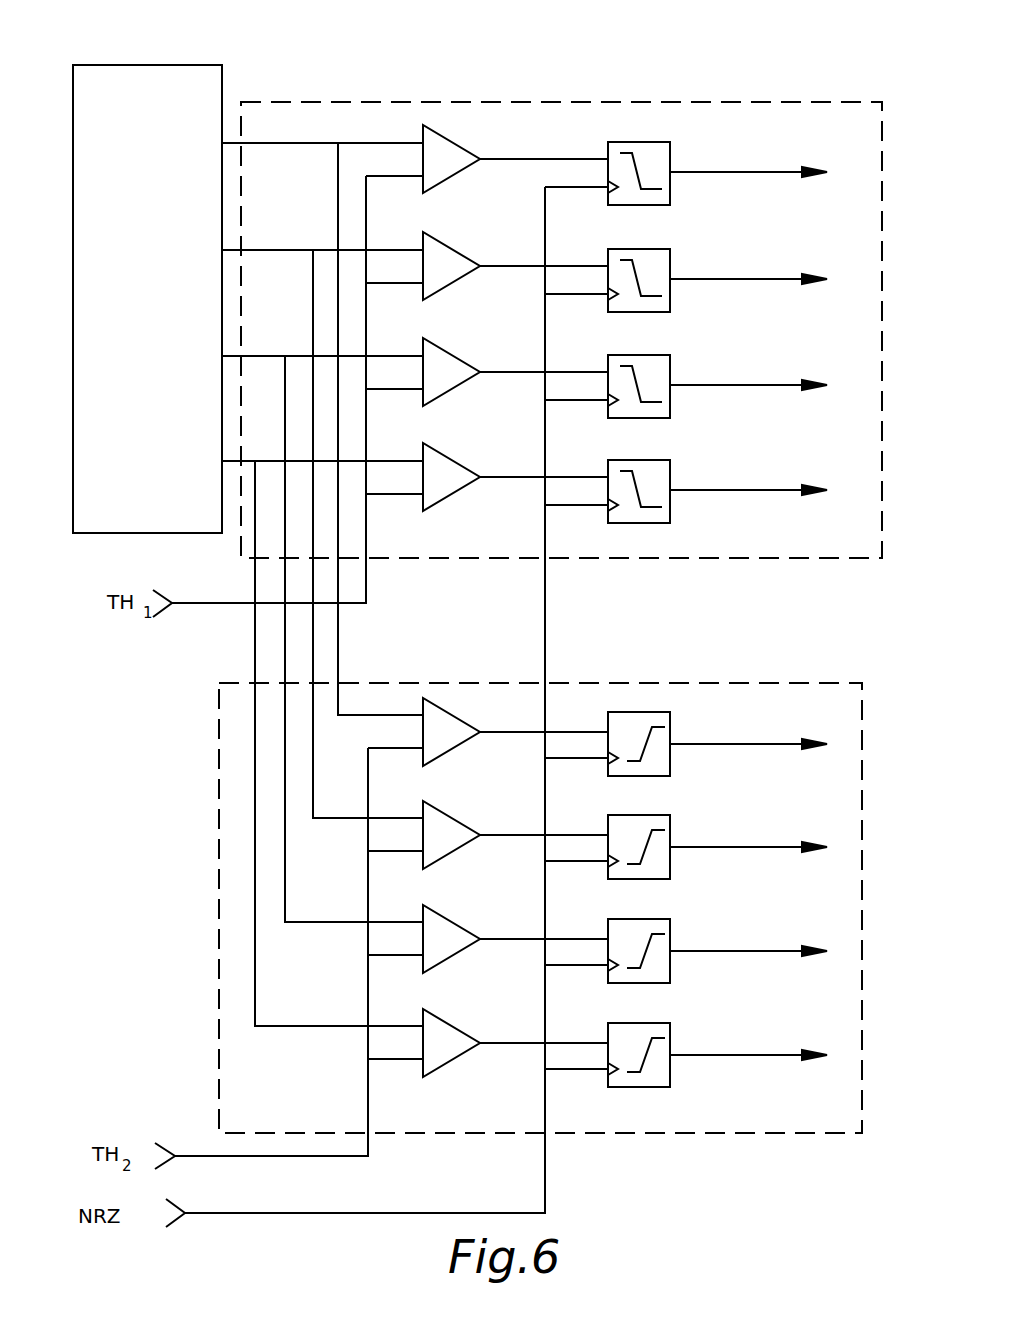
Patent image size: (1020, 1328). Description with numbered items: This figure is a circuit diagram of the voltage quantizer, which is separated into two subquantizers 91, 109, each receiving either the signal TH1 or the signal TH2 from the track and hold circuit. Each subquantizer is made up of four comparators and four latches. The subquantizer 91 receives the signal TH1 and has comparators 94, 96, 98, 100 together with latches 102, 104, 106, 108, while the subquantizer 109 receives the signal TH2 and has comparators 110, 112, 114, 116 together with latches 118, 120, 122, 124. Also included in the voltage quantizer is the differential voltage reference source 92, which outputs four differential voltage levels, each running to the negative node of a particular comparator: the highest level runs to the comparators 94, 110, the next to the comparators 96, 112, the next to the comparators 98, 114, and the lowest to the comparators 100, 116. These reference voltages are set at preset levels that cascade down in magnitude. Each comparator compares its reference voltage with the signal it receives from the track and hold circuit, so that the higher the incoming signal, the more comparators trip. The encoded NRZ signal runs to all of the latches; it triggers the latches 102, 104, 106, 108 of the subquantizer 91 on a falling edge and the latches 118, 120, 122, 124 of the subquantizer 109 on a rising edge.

The subquantizer 91 is at (762, 102).
The differential voltage reference source 92 is at (175, 65).
The comparator 94 is at (455, 144).
The comparator 96 is at (443, 248).
The comparator 98 is at (447, 352).
The comparator 100 is at (454, 458).
The latch 102 is at (650, 142).
The latch 104 is at (670, 260).
The latch 106 is at (670, 365).
The latch 108 is at (652, 460).
The subquantizer 109 is at (560, 882).
The comparator 110 is at (460, 720).
The comparator 112 is at (452, 822).
The comparator 114 is at (452, 925).
The comparator 116 is at (450, 1026).
The latch 118 is at (650, 712).
The latch 120 is at (673, 826).
The latch 122 is at (673, 933).
The latch 124 is at (673, 1027).